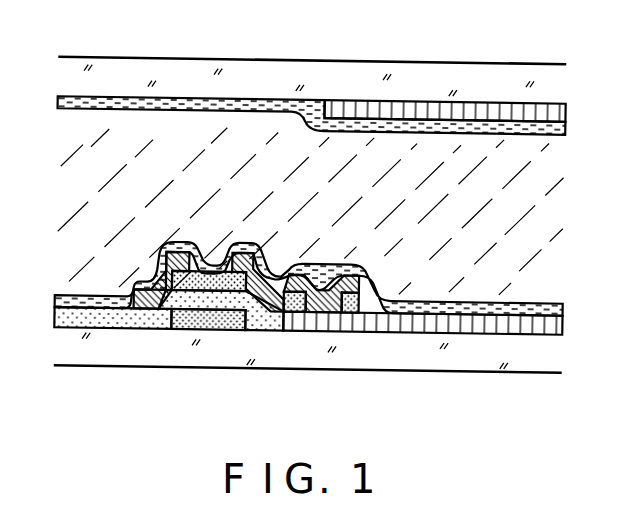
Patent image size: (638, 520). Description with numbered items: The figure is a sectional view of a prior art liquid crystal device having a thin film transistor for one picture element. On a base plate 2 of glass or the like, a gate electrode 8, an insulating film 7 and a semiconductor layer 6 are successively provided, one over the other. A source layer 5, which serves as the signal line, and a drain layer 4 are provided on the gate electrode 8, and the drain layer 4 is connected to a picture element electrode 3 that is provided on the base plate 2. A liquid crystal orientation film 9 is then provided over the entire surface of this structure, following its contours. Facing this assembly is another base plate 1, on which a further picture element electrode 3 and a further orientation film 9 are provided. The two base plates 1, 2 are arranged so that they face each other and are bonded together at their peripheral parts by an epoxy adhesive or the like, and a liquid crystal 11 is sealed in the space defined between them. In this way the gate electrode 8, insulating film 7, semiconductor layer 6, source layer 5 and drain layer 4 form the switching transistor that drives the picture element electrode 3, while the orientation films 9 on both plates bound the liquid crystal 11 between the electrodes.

The base plate 1 is at (511, 90).
The base plate 2 is at (535, 357).
The picture element electrode 3 is at (466, 107).
The drain layer 4 is at (265, 297).
The source layer 5 is at (137, 302).
The semiconductor layer 6 is at (217, 283).
The insulating film 7 is at (97, 322).
The gate electrode 8 is at (178, 293).
The liquid crystal orientation film 9 is at (275, 103).
The liquid crystal 11 is at (397, 150).